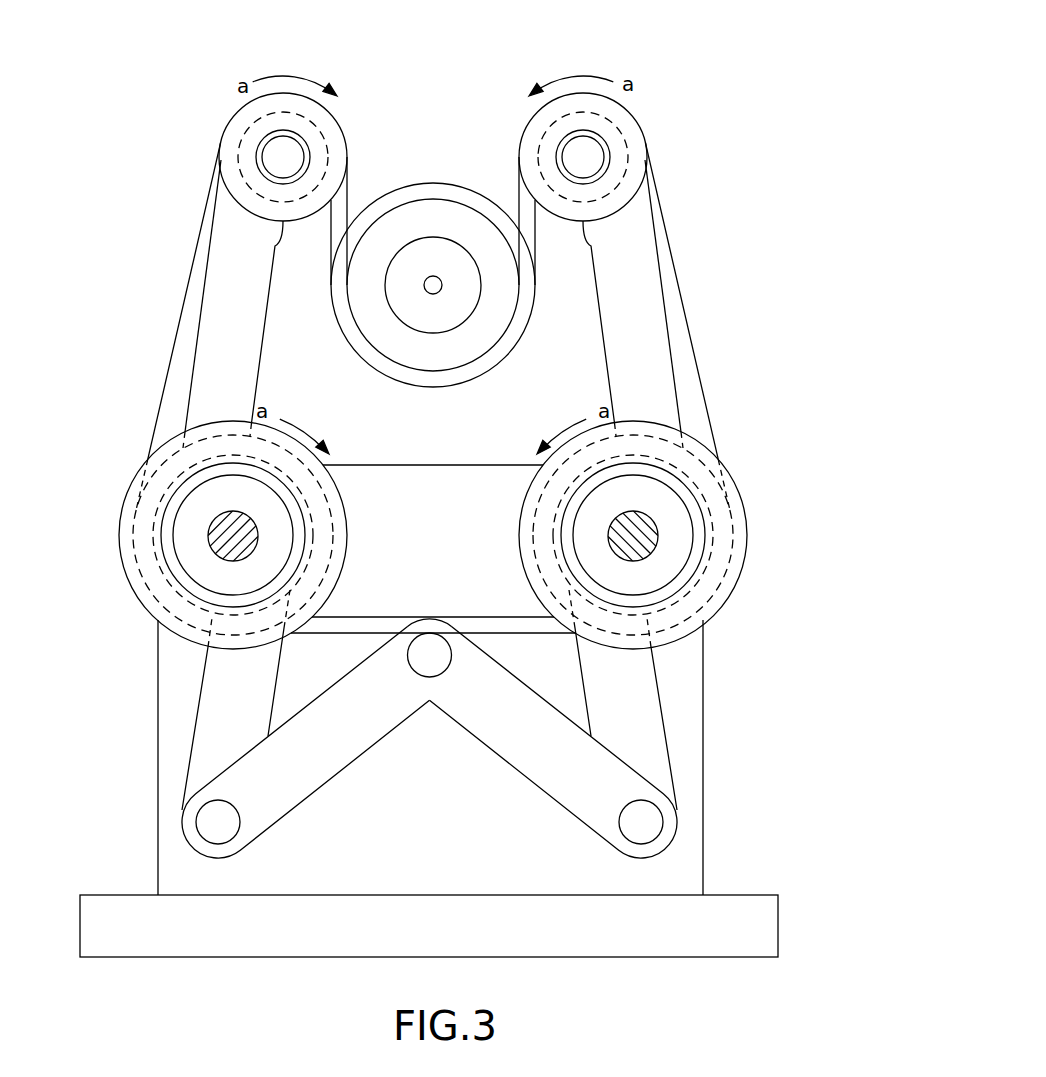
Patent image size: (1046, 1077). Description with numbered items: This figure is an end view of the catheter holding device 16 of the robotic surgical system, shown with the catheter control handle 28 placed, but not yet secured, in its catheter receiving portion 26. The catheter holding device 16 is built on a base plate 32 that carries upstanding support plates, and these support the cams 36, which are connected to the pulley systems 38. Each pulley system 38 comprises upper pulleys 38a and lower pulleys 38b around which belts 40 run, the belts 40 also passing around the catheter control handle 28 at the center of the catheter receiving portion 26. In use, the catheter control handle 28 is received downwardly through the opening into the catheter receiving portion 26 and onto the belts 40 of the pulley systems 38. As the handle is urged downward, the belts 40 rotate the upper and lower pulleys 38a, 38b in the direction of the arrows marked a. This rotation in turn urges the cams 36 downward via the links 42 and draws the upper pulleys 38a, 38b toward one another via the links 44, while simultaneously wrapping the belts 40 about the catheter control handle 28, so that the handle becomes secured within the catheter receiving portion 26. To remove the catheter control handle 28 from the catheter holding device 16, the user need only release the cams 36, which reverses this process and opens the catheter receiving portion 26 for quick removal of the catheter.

The catheter holding device 16 is at (724, 138).
The catheter receiving portion 26 is at (456, 158).
The catheter control handle 28 is at (424, 286).
The base plate 32 is at (779, 895).
The cams 36 is at (595, 765).
The pulley systems 38 is at (227, 104).
The upper pulleys 38a is at (278, 155).
The lower pulleys 38b is at (222, 531).
The belts 40 is at (530, 297).
The links 42 is at (215, 683).
The links 44 is at (205, 330).